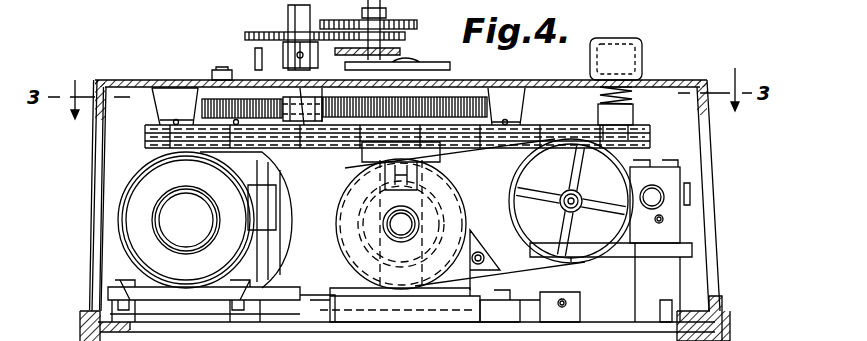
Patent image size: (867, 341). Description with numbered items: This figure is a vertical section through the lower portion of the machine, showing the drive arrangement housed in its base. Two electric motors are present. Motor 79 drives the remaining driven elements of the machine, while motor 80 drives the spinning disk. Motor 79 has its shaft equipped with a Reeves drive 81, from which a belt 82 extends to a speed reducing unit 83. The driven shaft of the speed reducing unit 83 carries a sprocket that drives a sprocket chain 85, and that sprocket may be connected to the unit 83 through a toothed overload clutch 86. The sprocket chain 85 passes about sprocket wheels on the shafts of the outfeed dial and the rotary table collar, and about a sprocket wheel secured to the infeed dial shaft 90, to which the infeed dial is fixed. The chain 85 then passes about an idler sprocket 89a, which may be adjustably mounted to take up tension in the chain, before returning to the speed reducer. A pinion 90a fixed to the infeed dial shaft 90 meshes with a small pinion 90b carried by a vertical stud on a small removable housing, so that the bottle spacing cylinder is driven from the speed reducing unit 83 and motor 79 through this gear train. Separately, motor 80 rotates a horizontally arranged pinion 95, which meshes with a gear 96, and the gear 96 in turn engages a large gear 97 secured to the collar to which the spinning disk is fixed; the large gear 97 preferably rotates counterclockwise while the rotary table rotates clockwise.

The electric motor 79 is at (350, 270).
The electric motor 80 is at (120, 190).
The Reeves drive 81 is at (434, 206).
The belt 82 is at (516, 267).
The speed reducing unit 83 is at (688, 152).
The sprocket chain 85 is at (585, 132).
The toothed overload clutch 86 is at (633, 107).
The idler sprocket 89a is at (150, 137).
The infeed dial shaft 90 is at (290, 10).
The pinion 90a is at (262, 36).
The small pinion 90b is at (390, 44).
The pinion 95 is at (213, 100).
The gear 96 is at (283, 100).
The large gear 97 is at (468, 107).